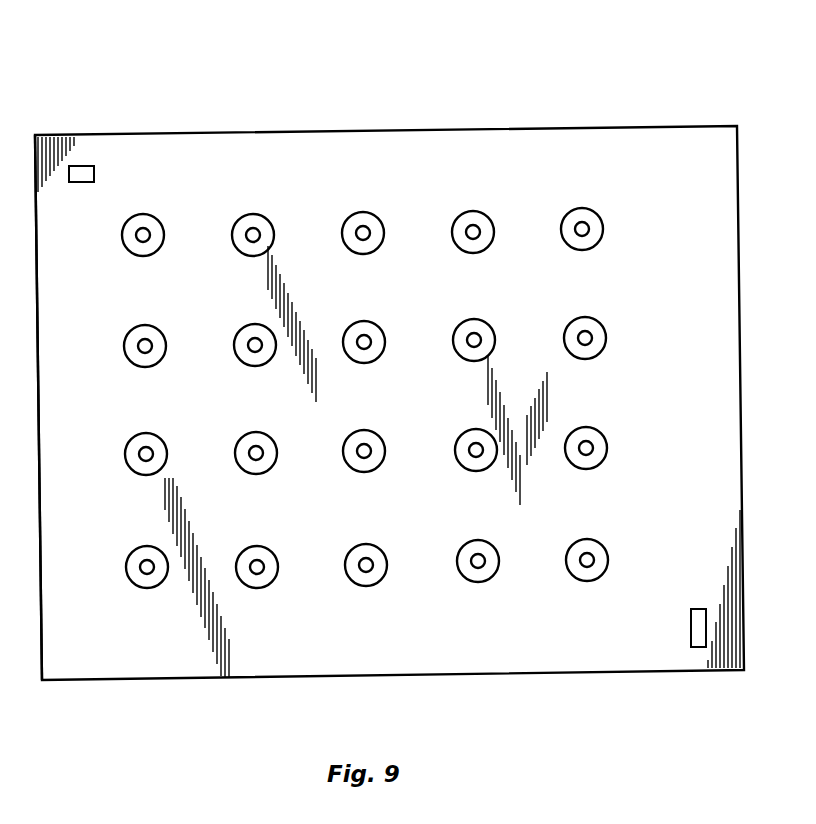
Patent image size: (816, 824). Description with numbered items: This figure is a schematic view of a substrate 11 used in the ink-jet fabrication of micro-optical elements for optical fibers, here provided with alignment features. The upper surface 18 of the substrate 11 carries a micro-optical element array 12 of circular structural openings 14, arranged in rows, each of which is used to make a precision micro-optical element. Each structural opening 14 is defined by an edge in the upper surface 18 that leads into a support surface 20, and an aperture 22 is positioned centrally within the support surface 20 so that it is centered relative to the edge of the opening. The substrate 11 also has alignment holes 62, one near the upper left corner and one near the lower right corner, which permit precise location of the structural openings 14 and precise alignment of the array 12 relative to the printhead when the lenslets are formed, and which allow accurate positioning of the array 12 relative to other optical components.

The substrate 11 is at (453, 113).
The micro-optical element array 12 is at (169, 338).
The structural opening 14 is at (372, 369).
The upper surface 18 is at (723, 318).
The support surface 20 is at (158, 347).
The aperture 22 is at (140, 352).
The alignment holes 62 is at (83, 165).